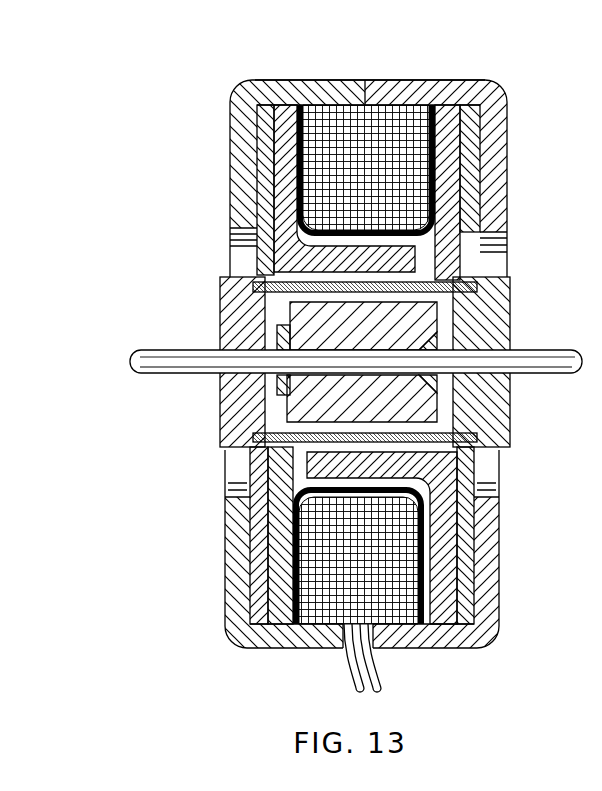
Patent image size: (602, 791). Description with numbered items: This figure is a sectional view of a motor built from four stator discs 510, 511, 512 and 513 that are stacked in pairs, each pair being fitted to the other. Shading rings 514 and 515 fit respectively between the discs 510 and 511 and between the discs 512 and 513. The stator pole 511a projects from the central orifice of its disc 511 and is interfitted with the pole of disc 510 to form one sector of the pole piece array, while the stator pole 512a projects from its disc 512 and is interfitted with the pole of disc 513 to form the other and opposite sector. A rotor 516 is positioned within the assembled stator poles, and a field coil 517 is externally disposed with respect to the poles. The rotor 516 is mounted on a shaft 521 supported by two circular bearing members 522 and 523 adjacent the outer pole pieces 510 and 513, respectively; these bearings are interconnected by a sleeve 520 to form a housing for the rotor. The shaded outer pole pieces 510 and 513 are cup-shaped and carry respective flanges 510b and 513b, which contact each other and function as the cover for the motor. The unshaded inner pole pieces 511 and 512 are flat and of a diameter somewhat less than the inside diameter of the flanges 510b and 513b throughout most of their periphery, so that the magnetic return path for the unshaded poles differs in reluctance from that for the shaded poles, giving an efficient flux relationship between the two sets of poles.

The stator disc 510 is at (232, 118).
The flange 510b is at (288, 80).
The stator disc 511 is at (298, 104).
The stator pole 511a is at (413, 258).
The stator disc 512 is at (450, 105).
The stator pole 512a is at (310, 465).
The stator disc 513 is at (503, 137).
The flange 513b is at (392, 80).
The shading ring 514 is at (257, 152).
The shading ring 515 is at (472, 105).
The rotor 516 is at (290, 408).
The field coil 517 is at (315, 616).
The sleeve 520 is at (472, 463).
The shaft 521 is at (524, 350).
The bearing member 522 is at (222, 322).
The bearing member 523 is at (510, 290).